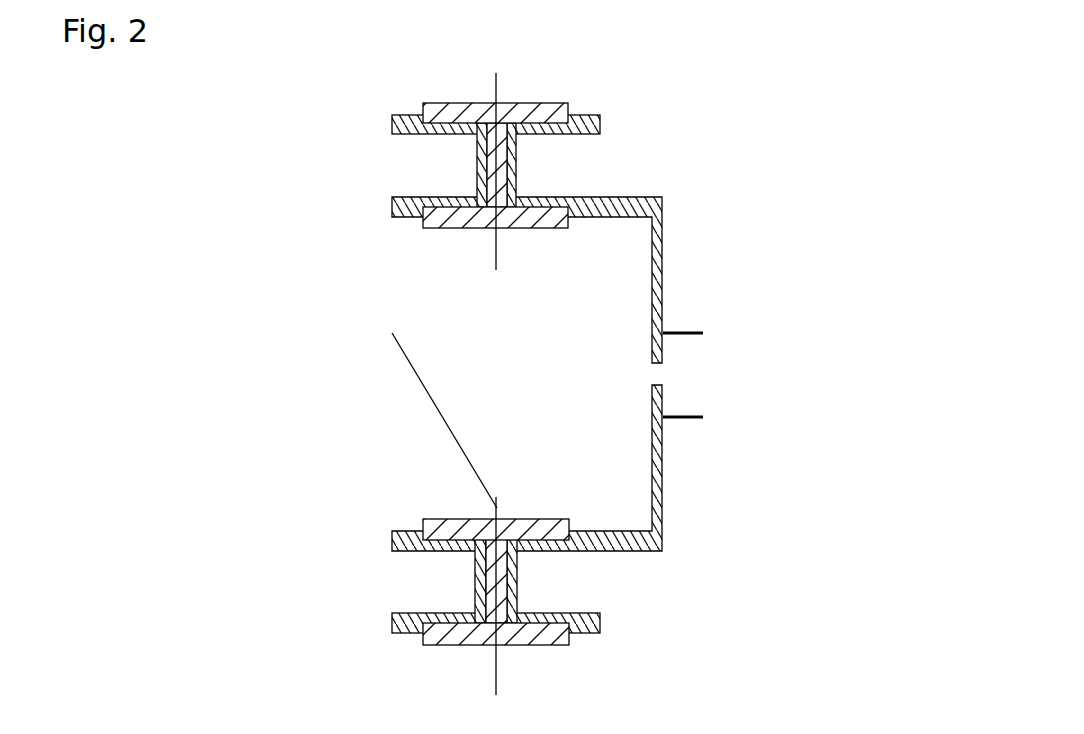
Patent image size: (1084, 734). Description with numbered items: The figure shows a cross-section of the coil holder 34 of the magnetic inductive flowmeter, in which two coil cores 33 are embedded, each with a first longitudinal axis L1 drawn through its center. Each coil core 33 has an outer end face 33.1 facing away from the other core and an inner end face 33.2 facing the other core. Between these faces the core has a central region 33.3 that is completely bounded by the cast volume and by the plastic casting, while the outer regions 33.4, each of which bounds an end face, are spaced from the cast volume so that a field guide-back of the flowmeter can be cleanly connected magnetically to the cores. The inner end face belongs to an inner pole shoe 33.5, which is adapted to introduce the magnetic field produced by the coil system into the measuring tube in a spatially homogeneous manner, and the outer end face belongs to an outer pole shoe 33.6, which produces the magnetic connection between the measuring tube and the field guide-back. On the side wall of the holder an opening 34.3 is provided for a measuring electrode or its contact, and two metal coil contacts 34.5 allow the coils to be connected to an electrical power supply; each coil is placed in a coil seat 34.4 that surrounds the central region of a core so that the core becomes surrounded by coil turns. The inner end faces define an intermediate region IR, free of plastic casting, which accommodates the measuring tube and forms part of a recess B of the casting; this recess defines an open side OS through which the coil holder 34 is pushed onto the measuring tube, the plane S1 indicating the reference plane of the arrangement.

The coil core 33 is at (472, 369).
The outer end face 33.1 is at (452, 103).
The inner end face 33.2 is at (453, 228).
The central region 33.3 is at (487, 167).
The outer region 33.4 is at (423, 109).
The inner pole shoe 33.5 is at (563, 215).
The outer pole shoe 33.6 is at (527, 113).
The coil holder 34 is at (647, 362).
The opening 34.3 is at (662, 373).
The coil seat 34.4 is at (538, 167).
The metal coil contact 34.5 is at (685, 333).
The plane S1 is at (705, 207).
The first longitudinal axis L1 is at (496, 262).
The recess B is at (497, 435).
The open side OS is at (352, 353).
The intermediate region IR is at (455, 352).